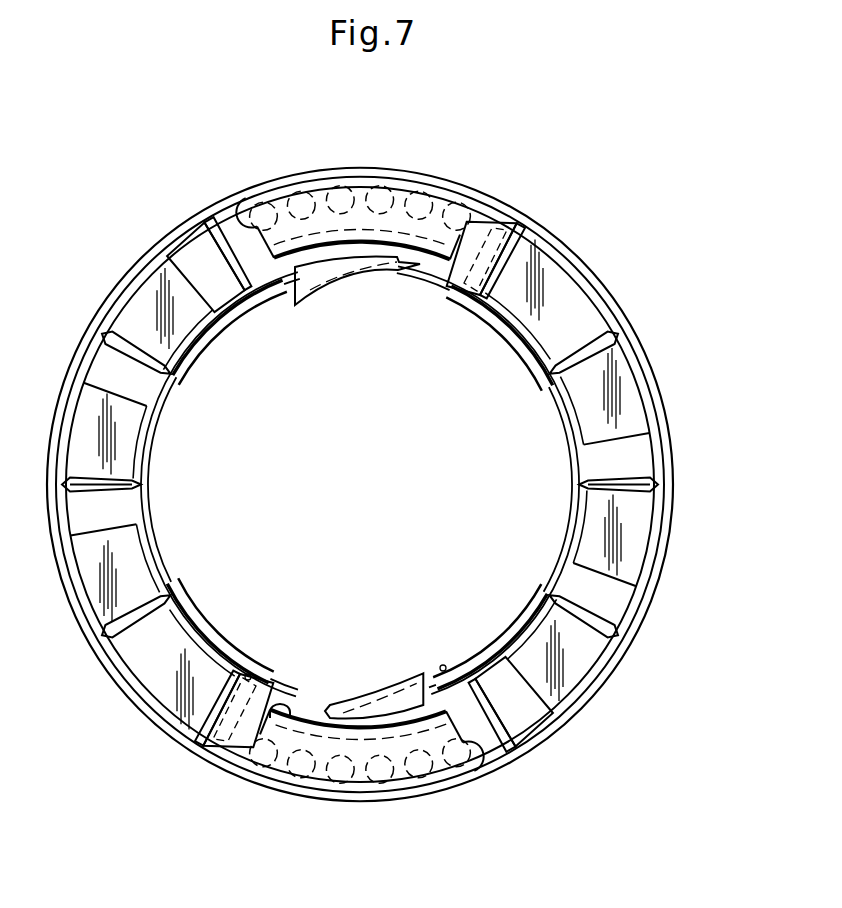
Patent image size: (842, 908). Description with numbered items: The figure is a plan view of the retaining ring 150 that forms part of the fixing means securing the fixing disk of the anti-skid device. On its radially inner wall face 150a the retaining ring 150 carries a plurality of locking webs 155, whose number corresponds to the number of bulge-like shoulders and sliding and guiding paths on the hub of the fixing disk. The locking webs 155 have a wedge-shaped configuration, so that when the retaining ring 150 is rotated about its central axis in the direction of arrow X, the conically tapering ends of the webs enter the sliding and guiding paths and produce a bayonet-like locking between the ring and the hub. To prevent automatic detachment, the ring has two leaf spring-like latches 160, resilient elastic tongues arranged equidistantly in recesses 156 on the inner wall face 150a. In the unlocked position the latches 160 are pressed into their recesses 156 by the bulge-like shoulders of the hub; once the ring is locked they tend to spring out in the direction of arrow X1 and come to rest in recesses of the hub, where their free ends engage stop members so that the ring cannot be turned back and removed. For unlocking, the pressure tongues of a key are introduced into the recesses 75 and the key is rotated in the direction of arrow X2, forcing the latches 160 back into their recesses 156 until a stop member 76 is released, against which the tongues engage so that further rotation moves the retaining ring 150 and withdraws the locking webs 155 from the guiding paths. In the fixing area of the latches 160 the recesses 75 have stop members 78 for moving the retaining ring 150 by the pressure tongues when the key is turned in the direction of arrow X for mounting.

The retaining ring 150 is at (594, 248).
The inner wall face 150a is at (556, 528).
The locking webs 155 is at (203, 360).
The recesses 156 is at (335, 252).
The leaf spring-like latches 160 is at (310, 270).
The recesses 75 is at (283, 722).
The stop member 76 is at (441, 666).
The stop members 78 is at (246, 678).
The arrow X is at (675, 372).
The arrow X1 is at (322, 318).
The arrow X2 is at (397, 648).